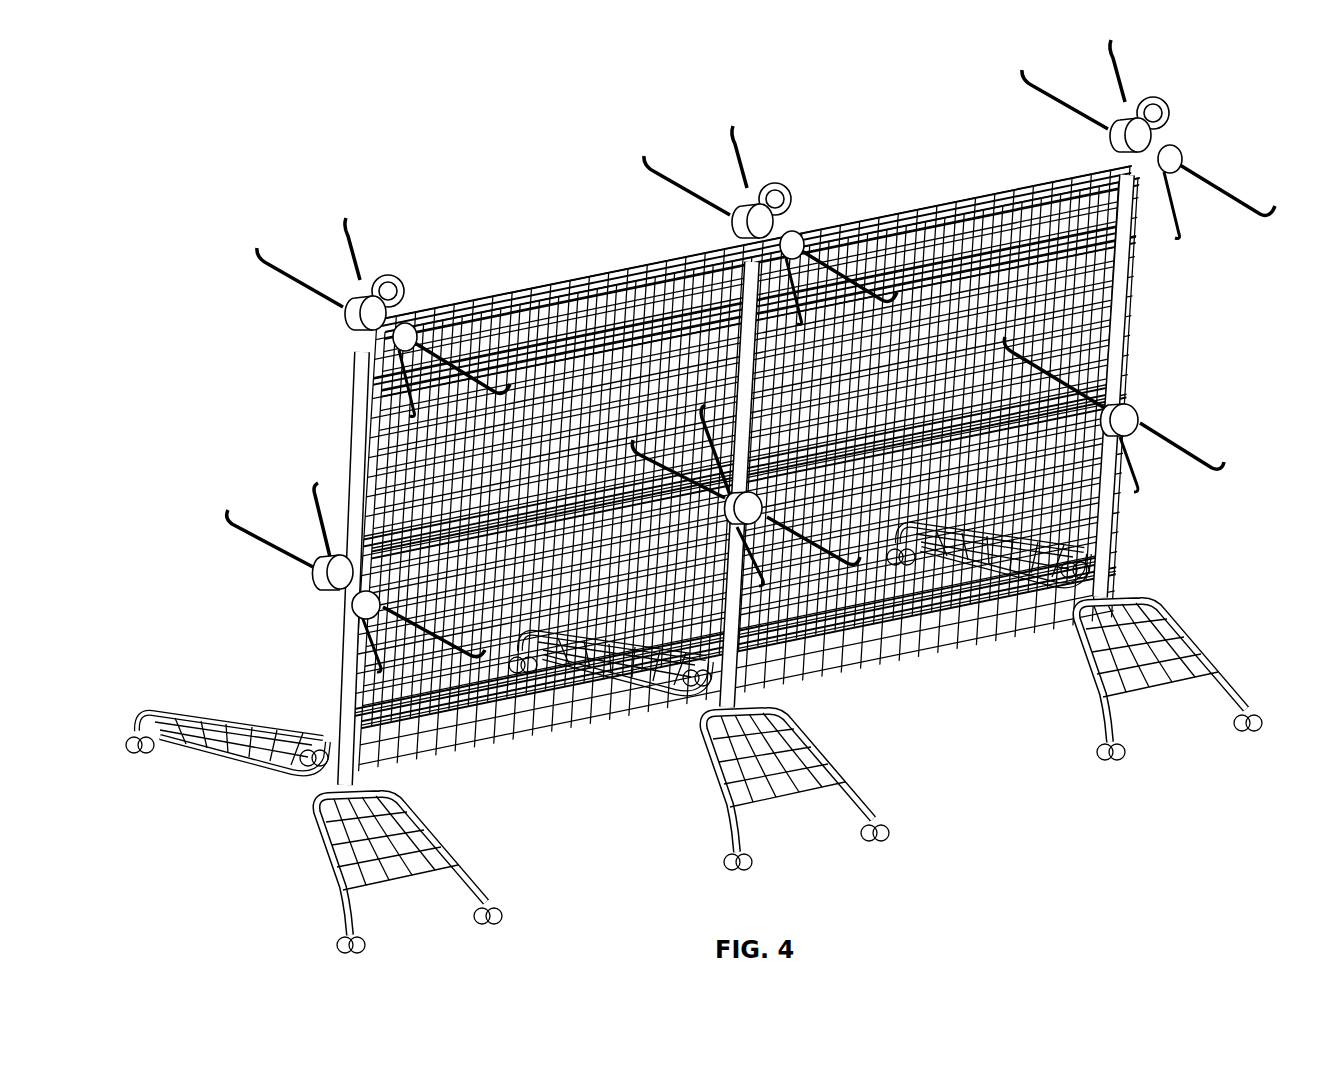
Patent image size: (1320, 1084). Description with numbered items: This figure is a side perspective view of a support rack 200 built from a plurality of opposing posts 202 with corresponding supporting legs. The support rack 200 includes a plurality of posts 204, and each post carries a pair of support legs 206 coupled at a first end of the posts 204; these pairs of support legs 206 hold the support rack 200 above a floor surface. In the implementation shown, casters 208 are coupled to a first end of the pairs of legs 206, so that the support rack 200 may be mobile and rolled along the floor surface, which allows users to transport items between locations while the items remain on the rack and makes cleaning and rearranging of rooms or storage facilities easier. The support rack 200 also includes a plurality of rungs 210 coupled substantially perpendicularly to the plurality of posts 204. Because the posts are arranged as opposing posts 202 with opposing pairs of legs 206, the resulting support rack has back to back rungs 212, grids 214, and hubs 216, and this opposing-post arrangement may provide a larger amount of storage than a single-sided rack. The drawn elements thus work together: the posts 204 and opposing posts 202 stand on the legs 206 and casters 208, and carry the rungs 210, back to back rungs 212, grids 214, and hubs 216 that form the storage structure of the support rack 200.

The support rack 200 is at (366, 120).
The opposing posts 202 is at (350, 398).
The posts 204 is at (405, 302).
The pairs of support legs 206 is at (420, 822).
The casters 208 is at (508, 912).
The rungs 210 is at (1183, 163).
The back to back rungs 212 is at (887, 213).
The grids 214 is at (988, 218).
The hubs 216 is at (730, 227).